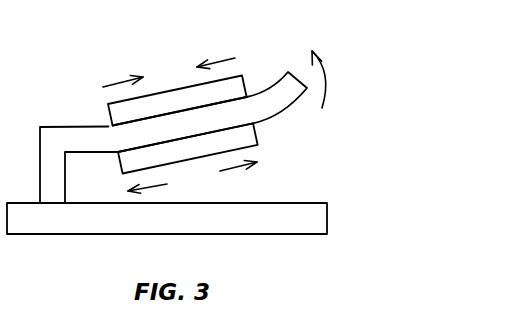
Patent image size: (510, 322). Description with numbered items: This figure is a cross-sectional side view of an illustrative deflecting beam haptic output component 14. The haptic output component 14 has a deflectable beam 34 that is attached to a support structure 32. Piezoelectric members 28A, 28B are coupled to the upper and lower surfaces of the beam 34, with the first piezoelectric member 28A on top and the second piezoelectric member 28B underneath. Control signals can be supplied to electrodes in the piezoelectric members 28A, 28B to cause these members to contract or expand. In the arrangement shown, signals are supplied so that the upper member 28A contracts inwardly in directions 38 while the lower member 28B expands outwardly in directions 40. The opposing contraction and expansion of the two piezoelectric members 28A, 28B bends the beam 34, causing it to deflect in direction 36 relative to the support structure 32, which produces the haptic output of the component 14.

The haptic output component 14 is at (358, 117).
The piezoelectric member 28A is at (110, 116).
The piezoelectric member 28B is at (256, 127).
The support structure 32 is at (50, 222).
The beam 34 is at (273, 88).
The direction 36 is at (323, 71).
The directions 38 is at (118, 83).
The directions 40 is at (233, 168).